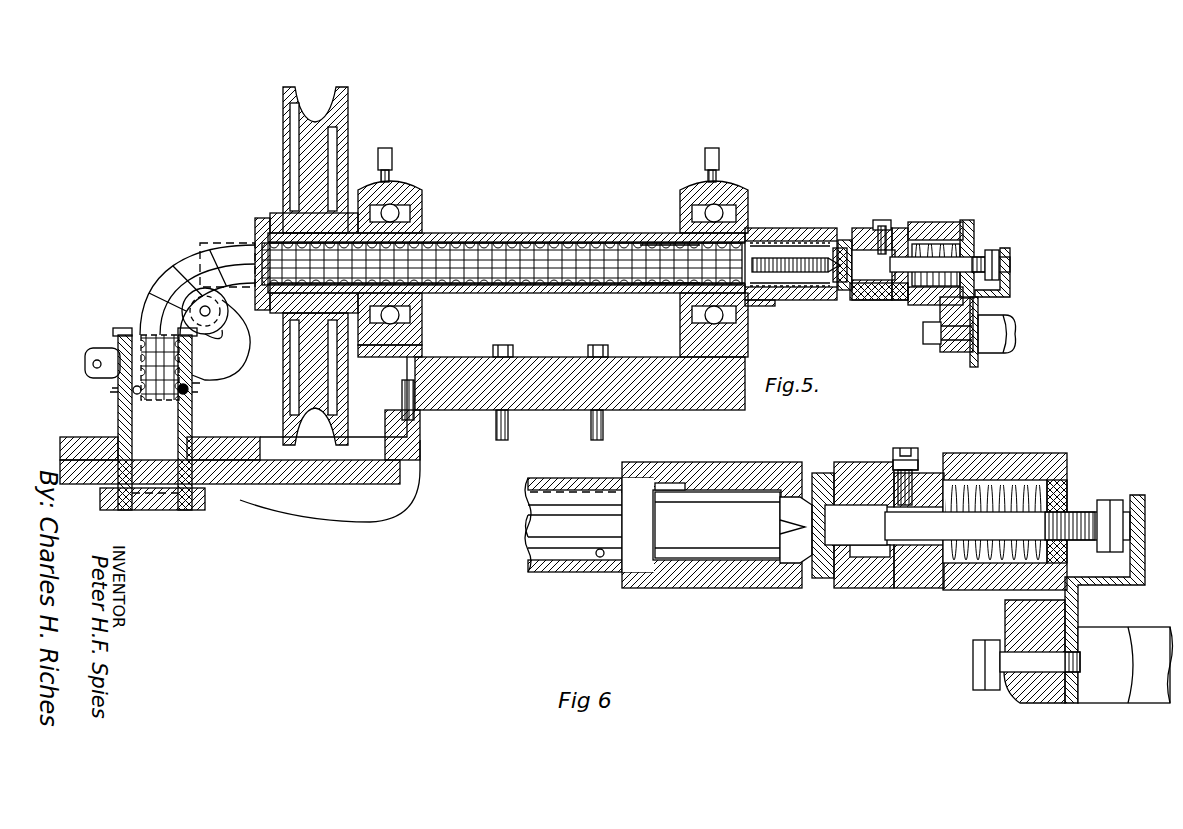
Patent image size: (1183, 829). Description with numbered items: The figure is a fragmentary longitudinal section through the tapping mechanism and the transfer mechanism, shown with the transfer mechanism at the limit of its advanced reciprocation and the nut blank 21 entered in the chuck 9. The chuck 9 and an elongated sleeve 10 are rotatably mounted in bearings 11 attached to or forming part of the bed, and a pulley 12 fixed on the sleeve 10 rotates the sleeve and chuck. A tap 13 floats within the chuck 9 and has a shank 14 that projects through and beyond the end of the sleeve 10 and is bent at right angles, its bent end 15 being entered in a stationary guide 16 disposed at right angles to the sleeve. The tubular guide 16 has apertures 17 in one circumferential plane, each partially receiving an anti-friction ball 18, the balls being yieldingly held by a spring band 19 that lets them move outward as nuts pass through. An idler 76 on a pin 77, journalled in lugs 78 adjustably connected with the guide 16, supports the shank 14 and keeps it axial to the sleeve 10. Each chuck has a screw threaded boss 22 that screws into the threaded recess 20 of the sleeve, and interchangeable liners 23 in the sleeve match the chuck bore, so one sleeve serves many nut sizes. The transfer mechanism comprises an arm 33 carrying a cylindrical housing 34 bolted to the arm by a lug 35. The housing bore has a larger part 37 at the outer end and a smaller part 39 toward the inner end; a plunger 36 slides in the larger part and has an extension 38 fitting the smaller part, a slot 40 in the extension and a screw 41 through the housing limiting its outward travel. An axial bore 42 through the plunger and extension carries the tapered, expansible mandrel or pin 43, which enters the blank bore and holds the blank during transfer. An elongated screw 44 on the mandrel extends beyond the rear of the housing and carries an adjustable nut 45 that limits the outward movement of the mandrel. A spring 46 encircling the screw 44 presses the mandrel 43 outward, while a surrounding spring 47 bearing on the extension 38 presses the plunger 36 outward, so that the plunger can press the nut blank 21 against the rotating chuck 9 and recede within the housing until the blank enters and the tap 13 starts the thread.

In FIG. 5, the chuck 9 is at (800, 245).
In FIG. 6, the chuck 9 is at (745, 500).
In FIG. 5, the elongated sleeve 10 is at (575, 235).
In FIG. 6, the elongated sleeve 10 is at (555, 572).
In FIG. 5, the bearings 11 is at (410, 185).
In FIG. 5, the pulley 12 is at (313, 100).
In FIG. 5, the tap 13 is at (828, 256).
In FIG. 6, the tap 13 is at (735, 537).
In FIG. 5, the shank 14 is at (455, 262).
In FIG. 6, the shank 14 is at (586, 526).
In FIG. 5, the bent end 15 is at (132, 320).
In FIG. 5, the stationary guide 16 is at (118, 420).
In FIG. 5, the apertures 17 is at (195, 388).
In FIG. 5, the anti-friction ball 18 is at (195, 385).
In FIG. 5, the spring band 19 is at (195, 392).
In FIG. 5, the recess 20 is at (762, 230).
In FIG. 6, the recess 20 is at (682, 468).
In FIG. 5, the nut blank 21 is at (640, 250).
In FIG. 6, the nut blank 21 is at (803, 500).
In FIG. 5, the screw threaded boss 22 is at (765, 302).
In FIG. 6, the screw threaded boss 22 is at (695, 478).
In FIG. 5, the liners 23 is at (610, 240).
In FIG. 6, the liners 23 is at (605, 560).
In FIG. 5, the arm 33 is at (990, 348).
In FIG. 6, the arm 33 is at (1145, 695).
In FIG. 5, the cylindrical housing 34 is at (880, 300).
In FIG. 6, the cylindrical housing 34 is at (925, 588).
In FIG. 5, the lug 35 is at (930, 305).
In FIG. 6, the lug 35 is at (1015, 660).
In FIG. 5, the plunger 36 is at (860, 300).
In FIG. 6, the plunger 36 is at (878, 588).
In FIG. 5, the larger part of the bore 37 is at (883, 230).
In FIG. 6, the larger part of the bore 37 is at (882, 490).
In FIG. 5, the extension 38 is at (905, 232).
In FIG. 6, the extension 38 is at (905, 590).
In FIG. 5, the smaller part of the bore 39 is at (965, 238).
In FIG. 6, the smaller part of the bore 39 is at (1068, 470).
In FIG. 6, the slot 40 is at (915, 458).
In FIG. 5, the screw 41 is at (885, 225).
In FIG. 6, the screw 41 is at (900, 448).
In FIG. 5, the axial bore 42 is at (845, 290).
In FIG. 6, the axial bore 42 is at (813, 570).
In FIG. 5, the mandrel or pin 43 is at (868, 248).
In FIG. 6, the mandrel or pin 43 is at (856, 525).
In FIG. 5, the elongated screw 44 is at (1012, 264).
In FIG. 6, the elongated screw 44 is at (1007, 526).
In FIG. 5, the adjustable stop or nut 45 is at (1008, 260).
In FIG. 6, the adjustable stop or nut 45 is at (1115, 505).
In FIG. 5, the spring 46 is at (975, 255).
In FIG. 6, the spring 46 is at (1062, 498).
In FIG. 5, the spring 47 is at (978, 292).
In FIG. 6, the spring 47 is at (1078, 587).
In FIG. 5, the idler 76 is at (235, 261).
In FIG. 5, the pin 77 is at (219, 311).
In FIG. 5, the lugs 78 is at (221, 340).